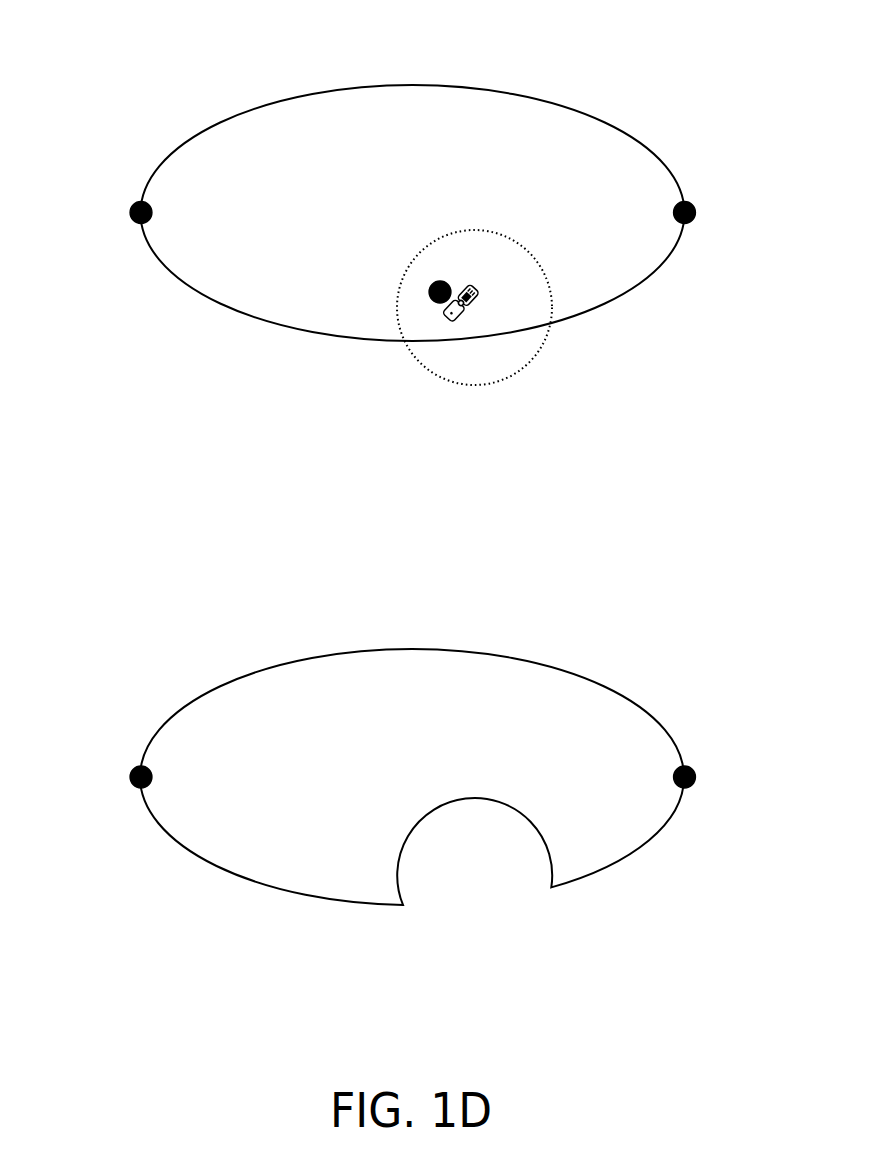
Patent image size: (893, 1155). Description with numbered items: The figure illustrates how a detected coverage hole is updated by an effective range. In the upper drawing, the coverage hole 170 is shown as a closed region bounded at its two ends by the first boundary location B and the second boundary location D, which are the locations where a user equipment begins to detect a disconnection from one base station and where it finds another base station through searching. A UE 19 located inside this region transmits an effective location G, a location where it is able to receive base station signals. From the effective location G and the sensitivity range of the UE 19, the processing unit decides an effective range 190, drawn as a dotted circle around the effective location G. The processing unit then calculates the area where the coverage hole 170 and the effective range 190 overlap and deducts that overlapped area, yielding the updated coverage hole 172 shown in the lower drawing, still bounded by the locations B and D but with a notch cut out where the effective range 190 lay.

The coverage hole 170 is at (417, 76).
The updated coverage hole 172 is at (417, 639).
The effective range 190 is at (479, 223).
The UE 19 is at (475, 307).
The first boundary location B is at (119, 211).
The second boundary location D is at (705, 211).
The effective location G is at (425, 280).